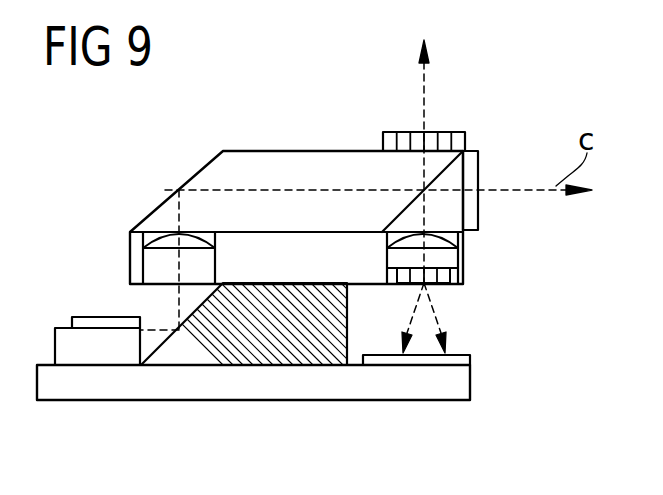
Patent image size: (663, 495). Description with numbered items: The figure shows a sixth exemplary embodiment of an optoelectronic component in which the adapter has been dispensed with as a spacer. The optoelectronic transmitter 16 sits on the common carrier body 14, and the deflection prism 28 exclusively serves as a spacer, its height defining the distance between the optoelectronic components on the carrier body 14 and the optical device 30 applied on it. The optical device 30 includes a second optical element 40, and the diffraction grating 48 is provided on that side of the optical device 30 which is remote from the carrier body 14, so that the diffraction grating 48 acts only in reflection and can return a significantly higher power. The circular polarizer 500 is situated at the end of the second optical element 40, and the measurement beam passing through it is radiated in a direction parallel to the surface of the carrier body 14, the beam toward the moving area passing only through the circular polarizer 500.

The carrier body 14 is at (452, 380).
The optoelectronic transmitter 16 is at (88, 322).
The deflection prism 28 is at (212, 366).
The optical device 30 is at (143, 189).
The second optical element 40 is at (250, 158).
The diffraction grating 48 is at (455, 146).
The circular polarizer 500 is at (475, 212).